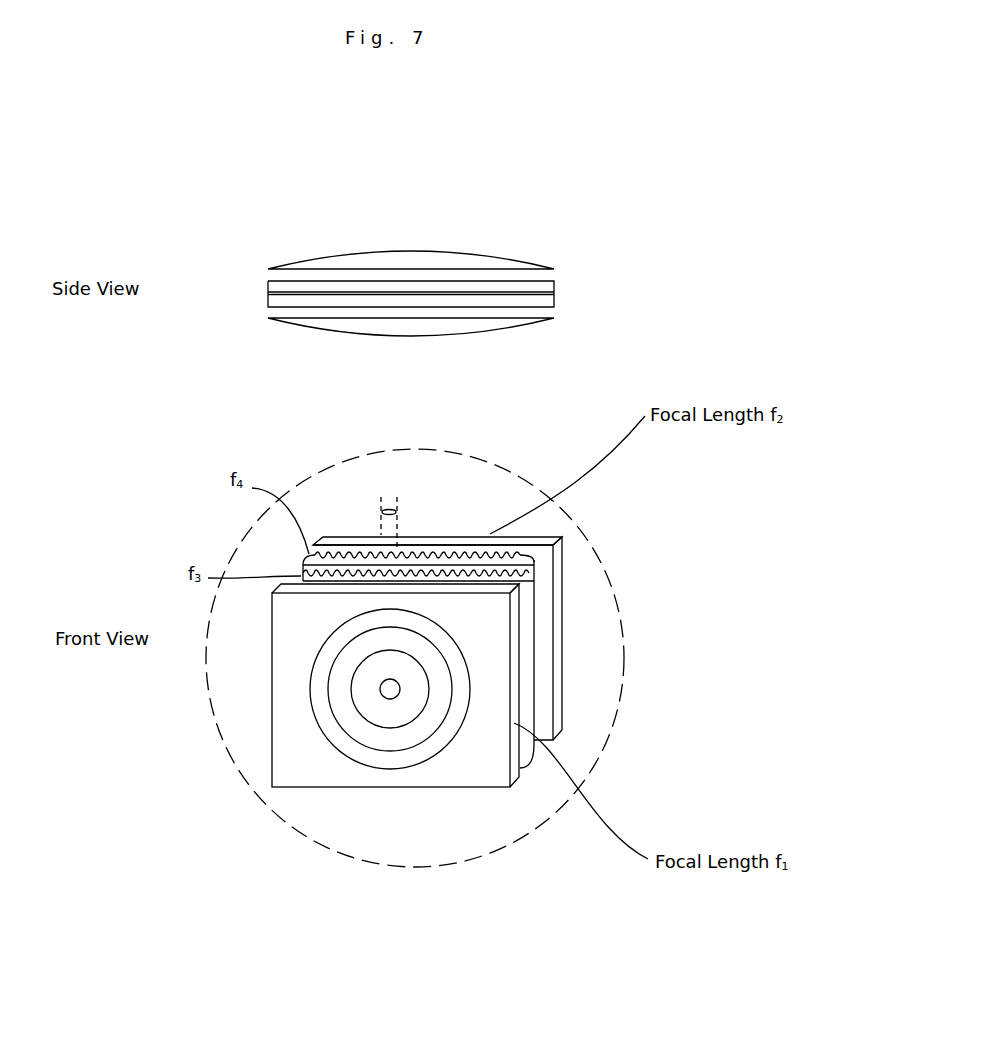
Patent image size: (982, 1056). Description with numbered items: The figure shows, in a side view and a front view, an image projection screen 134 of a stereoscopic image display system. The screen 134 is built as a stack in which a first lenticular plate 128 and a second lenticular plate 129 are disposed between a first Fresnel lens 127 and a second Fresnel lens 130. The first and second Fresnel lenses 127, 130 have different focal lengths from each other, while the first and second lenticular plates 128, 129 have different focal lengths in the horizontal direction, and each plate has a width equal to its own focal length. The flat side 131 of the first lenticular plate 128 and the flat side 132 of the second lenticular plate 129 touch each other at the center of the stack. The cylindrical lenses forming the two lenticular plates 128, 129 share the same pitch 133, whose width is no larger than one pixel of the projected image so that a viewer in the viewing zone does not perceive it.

The first Fresnel lens 127 is at (508, 322).
The first lenticular plate 128 is at (543, 298).
The second lenticular plate 129 is at (543, 285).
The second Fresnel lens 130 is at (497, 262).
The flat side of the first lenticular plate 131 is at (267, 297).
The flat side of the second lenticular plate 132 is at (293, 292).
The pitch of the cylindrical lenses 133 is at (389, 506).
The screen 134 is at (282, 818).